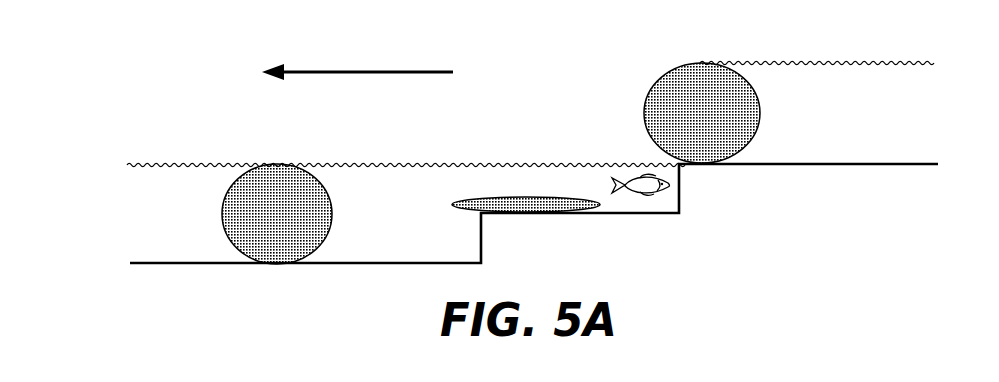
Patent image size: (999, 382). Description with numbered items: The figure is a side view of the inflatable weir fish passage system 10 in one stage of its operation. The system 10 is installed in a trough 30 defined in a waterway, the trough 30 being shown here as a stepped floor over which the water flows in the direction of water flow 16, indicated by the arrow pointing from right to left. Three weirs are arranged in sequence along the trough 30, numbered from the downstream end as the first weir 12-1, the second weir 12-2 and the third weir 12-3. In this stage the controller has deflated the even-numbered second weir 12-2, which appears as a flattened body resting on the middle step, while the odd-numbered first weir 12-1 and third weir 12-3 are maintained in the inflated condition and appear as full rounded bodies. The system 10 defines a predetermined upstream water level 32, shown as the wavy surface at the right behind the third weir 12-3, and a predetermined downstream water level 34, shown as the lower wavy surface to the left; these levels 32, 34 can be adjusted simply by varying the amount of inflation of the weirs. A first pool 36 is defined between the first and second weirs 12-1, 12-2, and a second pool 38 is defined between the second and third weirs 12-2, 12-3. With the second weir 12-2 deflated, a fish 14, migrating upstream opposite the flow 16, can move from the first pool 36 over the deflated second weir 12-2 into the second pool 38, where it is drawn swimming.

The fish passage system 10 is at (183, 90).
The first weir 12-1 is at (277, 265).
The second weir 12-2 is at (526, 213).
The third weir 12-3 is at (702, 165).
The fish 14 is at (645, 176).
The direction of water flow 16 is at (352, 70).
The trough 30 is at (850, 166).
The upstream water level 32 is at (796, 62).
The downstream water level 34 is at (190, 164).
The first pool 36 is at (388, 206).
The second pool 38 is at (647, 203).